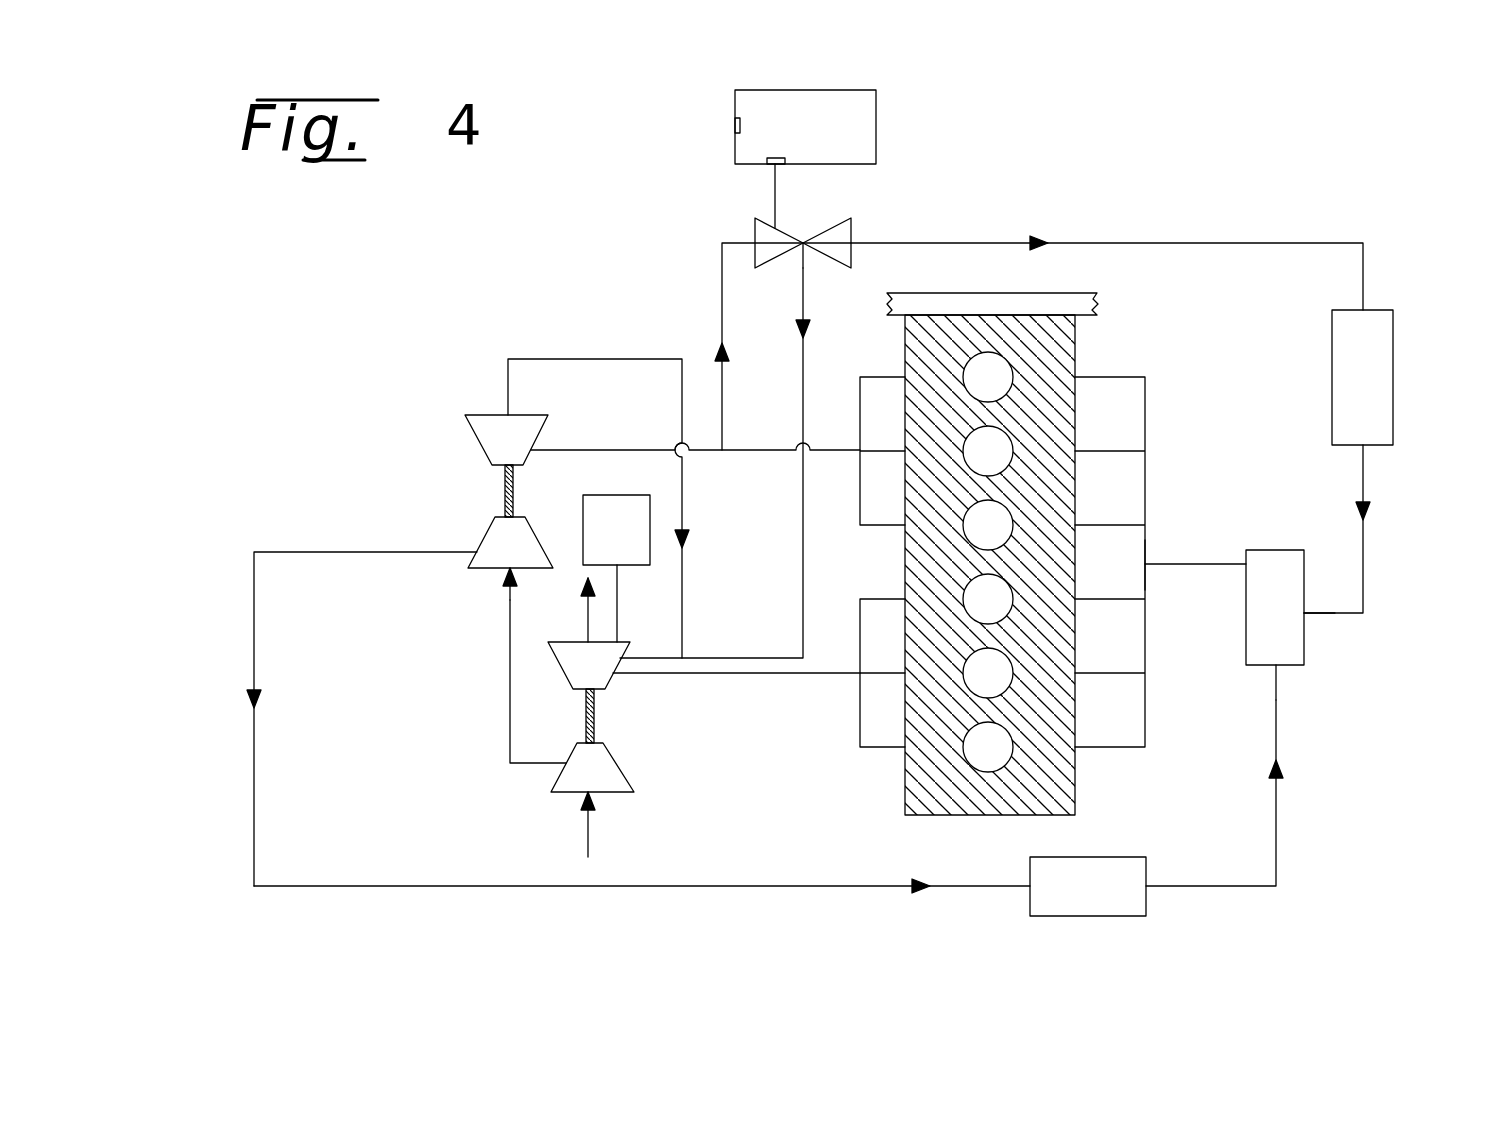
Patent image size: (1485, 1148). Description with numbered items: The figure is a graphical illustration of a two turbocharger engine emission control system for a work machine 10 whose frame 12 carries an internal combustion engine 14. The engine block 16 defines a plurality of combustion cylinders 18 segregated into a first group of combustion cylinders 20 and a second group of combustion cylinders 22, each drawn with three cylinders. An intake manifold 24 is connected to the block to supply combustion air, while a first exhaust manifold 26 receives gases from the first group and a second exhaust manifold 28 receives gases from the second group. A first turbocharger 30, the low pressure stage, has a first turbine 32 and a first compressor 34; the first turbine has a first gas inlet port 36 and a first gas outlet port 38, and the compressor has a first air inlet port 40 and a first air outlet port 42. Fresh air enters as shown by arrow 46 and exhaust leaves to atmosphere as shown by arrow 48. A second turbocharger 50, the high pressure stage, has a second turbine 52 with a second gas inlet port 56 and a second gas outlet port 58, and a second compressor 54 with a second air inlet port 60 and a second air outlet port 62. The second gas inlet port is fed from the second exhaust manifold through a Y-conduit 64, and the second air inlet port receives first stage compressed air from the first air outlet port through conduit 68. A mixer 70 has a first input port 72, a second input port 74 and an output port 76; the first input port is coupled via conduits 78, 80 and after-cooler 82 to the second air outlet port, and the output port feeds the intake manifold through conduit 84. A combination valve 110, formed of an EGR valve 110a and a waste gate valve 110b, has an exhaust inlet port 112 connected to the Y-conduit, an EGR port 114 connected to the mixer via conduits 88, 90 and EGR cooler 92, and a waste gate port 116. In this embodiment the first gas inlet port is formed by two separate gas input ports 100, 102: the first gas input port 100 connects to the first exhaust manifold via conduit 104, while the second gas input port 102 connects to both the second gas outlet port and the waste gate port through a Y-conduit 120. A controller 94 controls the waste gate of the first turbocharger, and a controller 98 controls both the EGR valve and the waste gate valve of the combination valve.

The work machine 10 is at (1112, 192).
The frame 12 is at (1048, 293).
The internal combustion engine 14 is at (1012, 560).
The block 16 is at (1075, 355).
The combustion cylinders 18 is at (975, 826).
The first group of combustion cylinders 20 is at (870, 728).
The second group of combustion cylinders 22 is at (878, 410).
The intake manifold 24 is at (1145, 432).
The first exhaust manifold 26 is at (860, 628).
The second exhaust manifold 28 is at (860, 496).
The first turbocharger 30 is at (608, 727).
The first turbine 32 is at (565, 665).
The first compressor 34 is at (616, 778).
The first gas inlet port 36 is at (616, 700).
The first gas outlet port 38 is at (590, 640).
The first air inlet port 40 is at (596, 796).
The first air outlet port 42 is at (560, 768).
The arrow 46 is at (586, 840).
The arrow 48 is at (585, 585).
The second turbocharger 50 is at (468, 622).
The second turbine 52 is at (475, 440).
The second compressor 54 is at (492, 530).
The second gas inlet port 56 is at (542, 442).
The second gas outlet port 58 is at (512, 414).
The second air inlet port 60 is at (503, 575).
The second air outlet port 62 is at (475, 552).
The Y-conduit 64 is at (724, 452).
The conduit 68 is at (508, 668).
The mixer 70 is at (1304, 640).
The first input port 72 is at (1278, 668).
The second input port 74 is at (1305, 607).
The output port 76 is at (1246, 558).
The conduit 78 is at (812, 886).
The conduit 80 is at (1278, 845).
The after-cooler 82 is at (1146, 905).
The conduit 84 is at (1170, 562).
The conduit 88 is at (1238, 243).
The conduit 90 is at (1363, 560).
The EGR cooler 92 is at (1332, 392).
The controller 94 is at (636, 542).
The controller 98 is at (826, 141).
The first gas input port 100 is at (612, 680).
The second gas input port 102 is at (618, 654).
The conduit 104 is at (778, 676).
The valve 110 is at (809, 217).
The EGR valve 110a is at (880, 222).
The waste gate valve 110b is at (820, 268).
The exhaust inlet port 112 is at (755, 238).
The EGR port 114 is at (851, 250).
The waste gate port 116 is at (798, 255).
The Y-conduit 120 is at (684, 657).